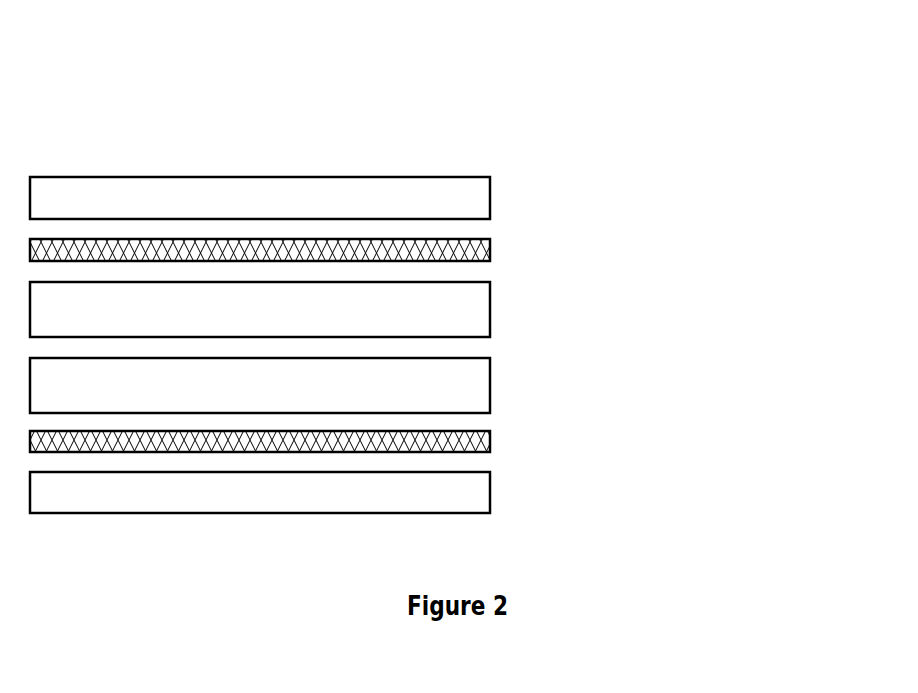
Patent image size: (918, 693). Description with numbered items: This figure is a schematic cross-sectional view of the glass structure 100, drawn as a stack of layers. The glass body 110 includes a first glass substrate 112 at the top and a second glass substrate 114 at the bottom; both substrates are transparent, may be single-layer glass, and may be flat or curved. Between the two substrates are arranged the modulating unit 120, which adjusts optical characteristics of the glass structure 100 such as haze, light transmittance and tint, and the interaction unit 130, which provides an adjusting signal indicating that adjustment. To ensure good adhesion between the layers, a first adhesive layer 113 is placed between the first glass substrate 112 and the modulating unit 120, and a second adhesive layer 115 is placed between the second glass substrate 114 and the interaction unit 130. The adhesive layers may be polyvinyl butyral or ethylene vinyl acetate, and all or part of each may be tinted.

The glass structure 100 is at (370, 137).
The glass body 110 is at (411, 344).
The first glass substrate 112 is at (490, 196).
The first adhesive layer 113 is at (490, 241).
The second glass substrate 114 is at (322, 499).
The second adhesive layer 115 is at (490, 440).
The modulating unit 120 is at (491, 323).
The interaction unit 130 is at (490, 385).